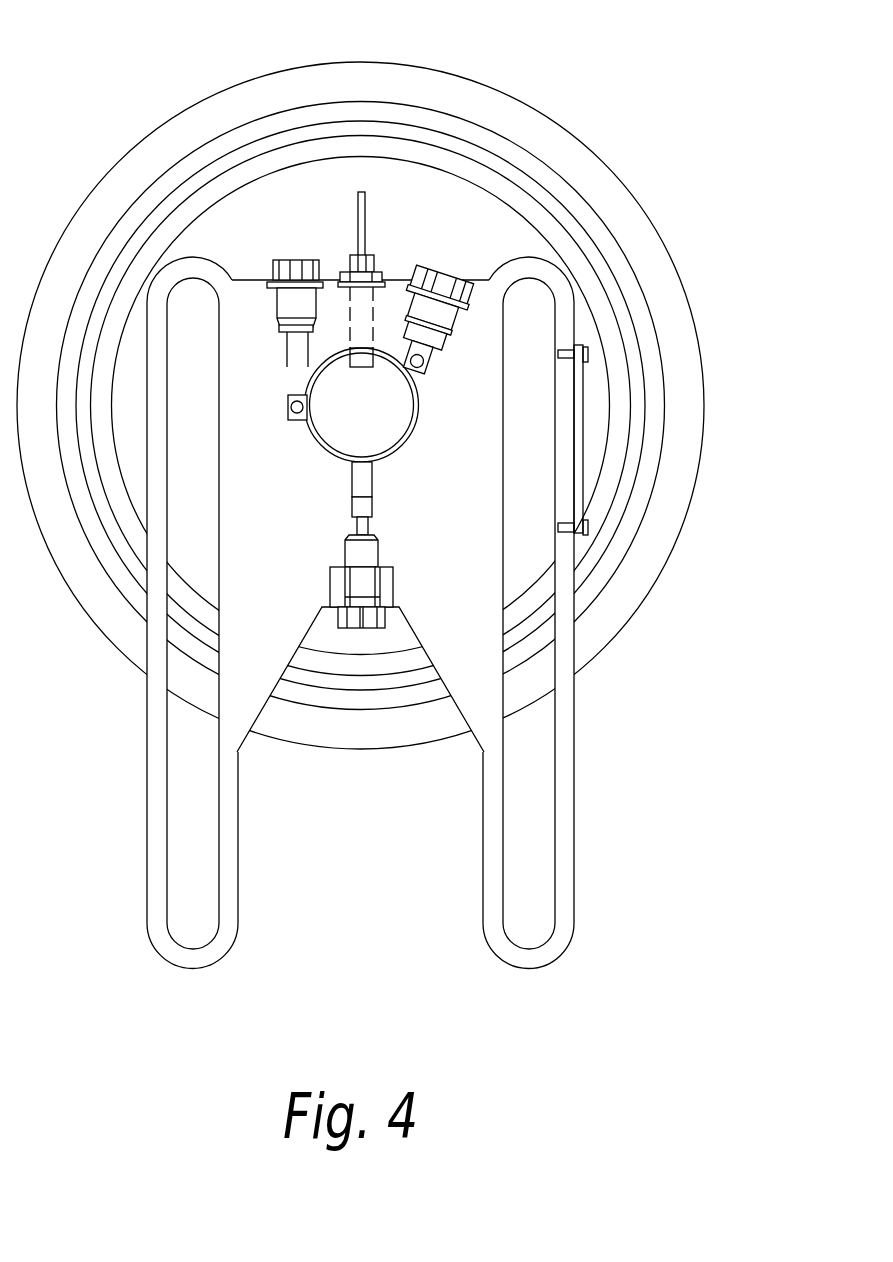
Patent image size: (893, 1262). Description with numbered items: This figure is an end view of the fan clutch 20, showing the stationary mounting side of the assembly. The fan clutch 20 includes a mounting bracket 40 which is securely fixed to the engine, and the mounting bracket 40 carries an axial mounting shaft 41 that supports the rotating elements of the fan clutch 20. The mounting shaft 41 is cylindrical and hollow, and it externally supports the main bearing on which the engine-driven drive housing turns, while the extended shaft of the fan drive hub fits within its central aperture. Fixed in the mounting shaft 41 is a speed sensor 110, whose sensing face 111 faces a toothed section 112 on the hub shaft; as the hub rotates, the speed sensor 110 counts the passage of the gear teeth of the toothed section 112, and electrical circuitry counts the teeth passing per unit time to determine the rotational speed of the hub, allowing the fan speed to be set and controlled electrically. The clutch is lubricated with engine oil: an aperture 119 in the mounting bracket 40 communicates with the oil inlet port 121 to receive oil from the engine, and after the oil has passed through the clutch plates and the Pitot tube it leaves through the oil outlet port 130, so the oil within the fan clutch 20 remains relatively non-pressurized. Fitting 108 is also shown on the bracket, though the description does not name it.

The fan clutch 20 is at (703, 428).
The mounting bracket 40 is at (147, 875).
The mounting shaft 41 is at (382, 415).
The fitting 108 is at (297, 260).
The speed sensor 110 is at (377, 260).
The sensing face 111 is at (358, 365).
The toothed section 112 is at (337, 457).
The aperture 119 is at (377, 517).
The oil inlet port 121 is at (363, 628).
The oil outlet port 130 is at (447, 262).